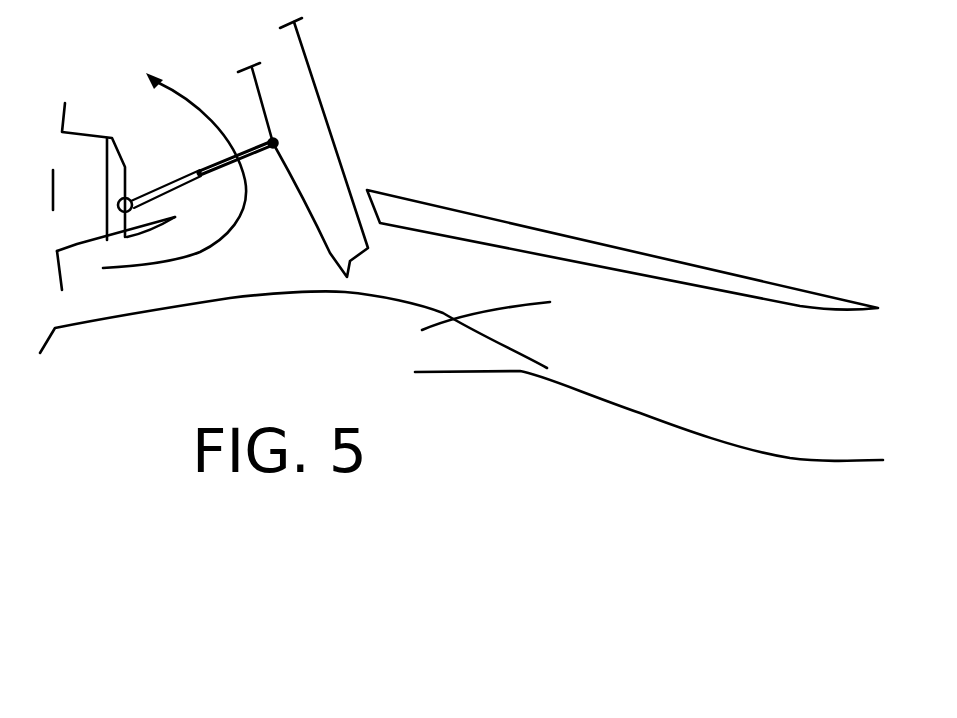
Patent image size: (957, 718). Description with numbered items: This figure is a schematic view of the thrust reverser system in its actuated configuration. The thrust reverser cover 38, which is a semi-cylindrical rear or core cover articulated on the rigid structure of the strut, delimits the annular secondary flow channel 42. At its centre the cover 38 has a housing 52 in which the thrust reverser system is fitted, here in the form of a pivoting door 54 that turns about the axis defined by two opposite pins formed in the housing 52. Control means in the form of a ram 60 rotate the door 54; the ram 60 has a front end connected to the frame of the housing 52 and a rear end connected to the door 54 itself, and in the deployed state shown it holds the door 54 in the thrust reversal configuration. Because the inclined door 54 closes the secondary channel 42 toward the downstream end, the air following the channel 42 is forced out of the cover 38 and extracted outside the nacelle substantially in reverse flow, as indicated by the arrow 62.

The thrust reverser cover 38 is at (480, 209).
The annular secondary flow channel 42 is at (122, 308).
The housing 52 is at (156, 158).
The pivoting door 54 is at (304, 81).
The ram 60 is at (195, 172).
The arrow 62 is at (192, 98).